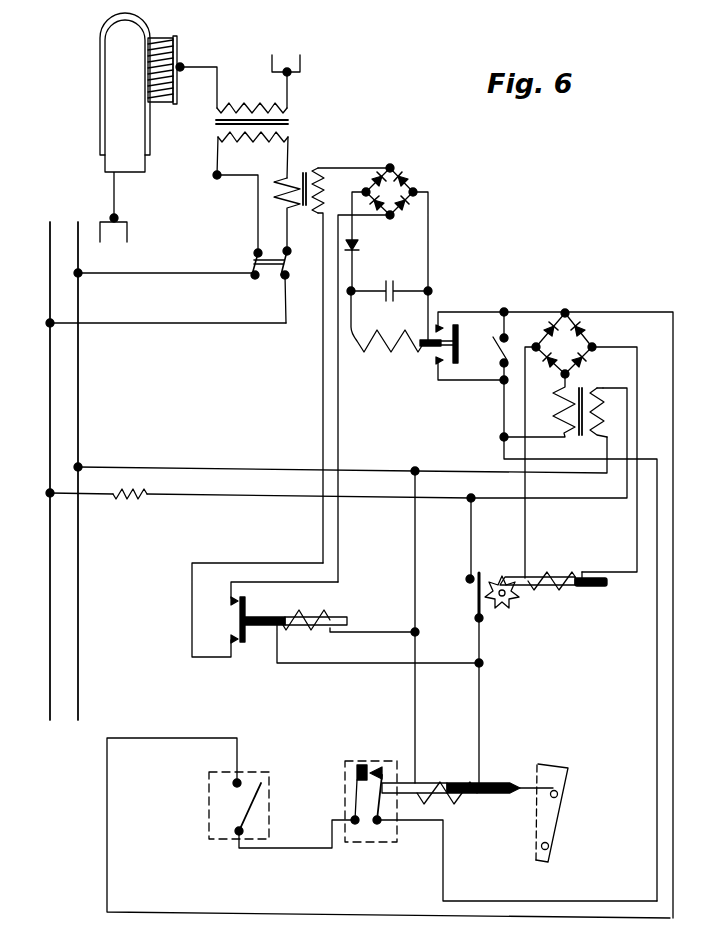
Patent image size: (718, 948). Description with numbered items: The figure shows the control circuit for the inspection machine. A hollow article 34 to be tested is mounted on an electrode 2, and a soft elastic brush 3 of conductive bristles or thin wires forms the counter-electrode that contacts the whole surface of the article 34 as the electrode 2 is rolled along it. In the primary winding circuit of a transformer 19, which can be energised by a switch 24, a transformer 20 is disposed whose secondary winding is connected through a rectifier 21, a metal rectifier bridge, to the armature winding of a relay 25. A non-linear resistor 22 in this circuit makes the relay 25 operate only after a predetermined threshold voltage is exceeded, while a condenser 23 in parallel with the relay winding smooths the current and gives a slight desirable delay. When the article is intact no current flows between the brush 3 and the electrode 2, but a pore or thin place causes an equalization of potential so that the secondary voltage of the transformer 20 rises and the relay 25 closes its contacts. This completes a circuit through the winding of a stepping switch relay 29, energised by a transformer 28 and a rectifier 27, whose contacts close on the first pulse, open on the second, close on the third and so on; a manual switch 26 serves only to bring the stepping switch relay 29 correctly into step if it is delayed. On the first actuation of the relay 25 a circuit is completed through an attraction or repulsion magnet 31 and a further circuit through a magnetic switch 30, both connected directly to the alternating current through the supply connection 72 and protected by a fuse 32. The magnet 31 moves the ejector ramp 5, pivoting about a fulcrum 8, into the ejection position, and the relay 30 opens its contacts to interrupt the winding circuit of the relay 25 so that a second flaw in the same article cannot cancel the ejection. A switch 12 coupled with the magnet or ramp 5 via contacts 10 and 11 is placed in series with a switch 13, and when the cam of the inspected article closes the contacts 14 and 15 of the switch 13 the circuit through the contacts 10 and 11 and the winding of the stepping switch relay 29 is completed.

The electrode 2 is at (115, 157).
The brush 3 is at (168, 60).
The ramp 5 is at (553, 812).
The fulcrum 8 is at (549, 847).
The contact 10 is at (380, 823).
The contact 11 is at (353, 841).
The switch 12 is at (372, 840).
The switch 13 is at (257, 838).
The contact 14 is at (232, 783).
The contact 15 is at (236, 831).
The transformer 19 is at (289, 112).
The transformer 20 is at (304, 167).
The rectifier 21 is at (408, 188).
The non-linear resistor 22 is at (359, 247).
The condenser 23 is at (395, 279).
The switch 24 is at (250, 260).
The relay 25 is at (512, 604).
The manual switch 26 is at (507, 348).
The rectifier 27 is at (581, 443).
The transformer 28 is at (583, 388).
The stepping switch relay 29 is at (555, 572).
The magnetic switch 30 is at (337, 627).
The magnet 31 is at (467, 778).
The fuse 32 is at (130, 501).
The hollow article 34 is at (102, 84).
The supply connection 72 is at (55, 622).